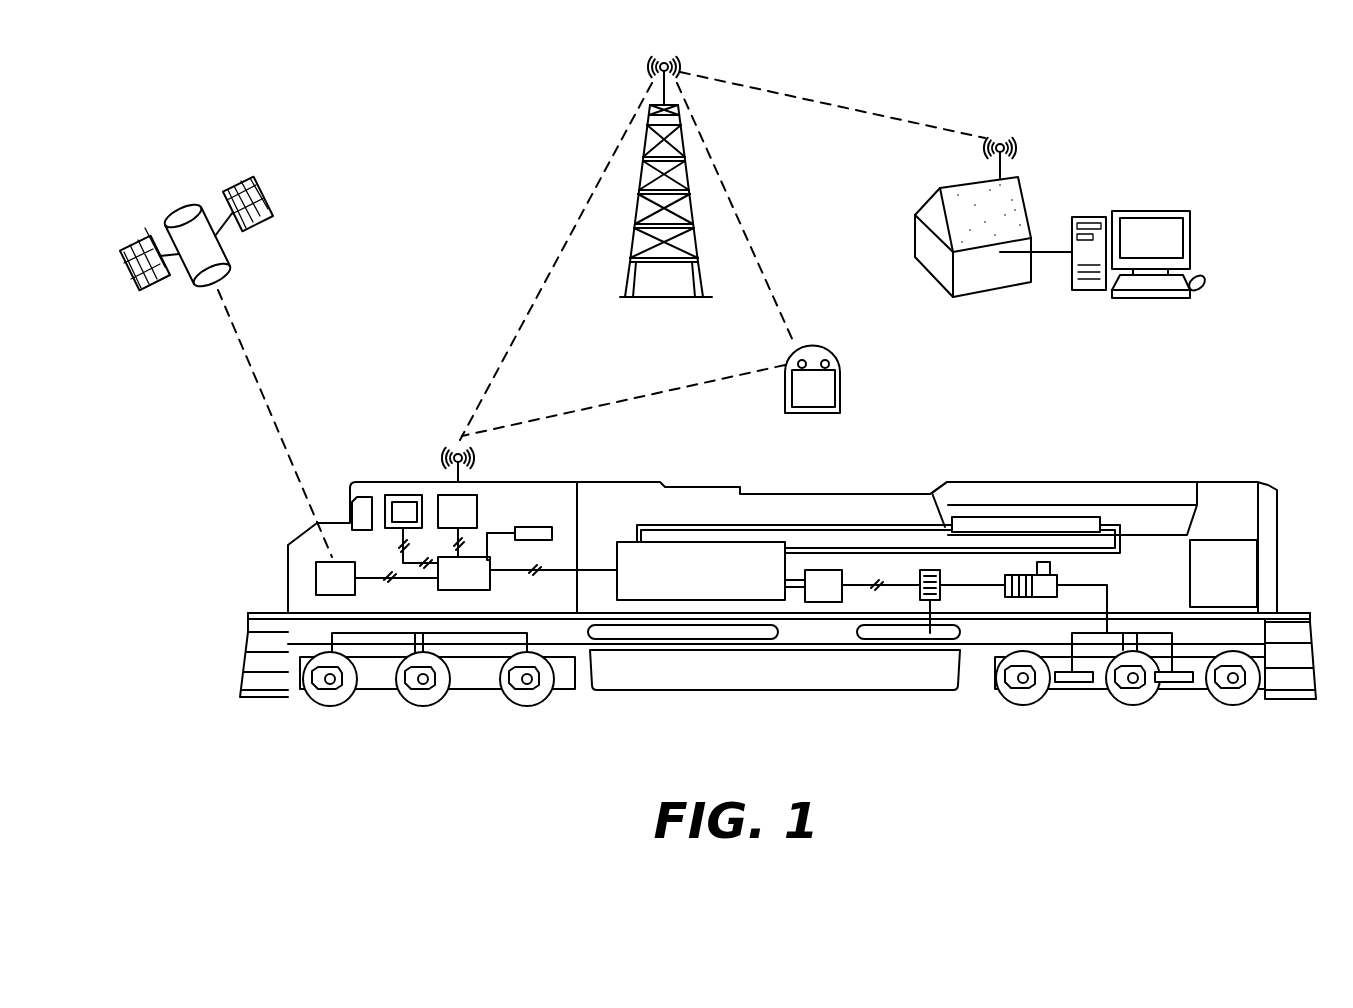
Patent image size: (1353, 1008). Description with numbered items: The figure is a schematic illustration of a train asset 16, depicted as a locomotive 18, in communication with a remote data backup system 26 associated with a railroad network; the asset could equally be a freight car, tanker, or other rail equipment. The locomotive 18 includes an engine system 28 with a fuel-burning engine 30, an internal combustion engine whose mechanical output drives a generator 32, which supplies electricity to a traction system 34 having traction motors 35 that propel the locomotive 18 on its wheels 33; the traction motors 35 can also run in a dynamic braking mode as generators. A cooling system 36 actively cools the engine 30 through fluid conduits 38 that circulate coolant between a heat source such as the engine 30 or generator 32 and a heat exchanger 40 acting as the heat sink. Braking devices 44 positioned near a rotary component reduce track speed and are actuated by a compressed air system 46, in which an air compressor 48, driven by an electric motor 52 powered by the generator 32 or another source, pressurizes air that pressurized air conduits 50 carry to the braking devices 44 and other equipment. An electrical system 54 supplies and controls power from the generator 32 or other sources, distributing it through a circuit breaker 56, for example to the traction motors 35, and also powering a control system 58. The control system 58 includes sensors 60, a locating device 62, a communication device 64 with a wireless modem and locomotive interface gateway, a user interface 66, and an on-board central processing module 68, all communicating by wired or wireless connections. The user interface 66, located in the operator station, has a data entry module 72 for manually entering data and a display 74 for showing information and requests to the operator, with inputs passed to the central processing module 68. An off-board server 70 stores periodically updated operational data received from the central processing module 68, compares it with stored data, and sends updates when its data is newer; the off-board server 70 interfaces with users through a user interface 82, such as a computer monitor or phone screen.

The train asset 16 is at (205, 576).
The locomotive 18 is at (288, 580).
The remote data backup system 26 is at (458, 215).
The engine system 28 is at (618, 534).
The engine 30 is at (688, 585).
The generator 32 is at (811, 599).
The wheels 33 is at (1192, 740).
The traction system 34 is at (773, 761).
The traction motors 35 is at (503, 740).
The cooling system 36 is at (1062, 466).
The fluid conduits 38 is at (822, 525).
The heat exchanger 40 is at (1003, 515).
The braking devices 44 is at (1113, 743).
The compressed air system 46 is at (1150, 571).
The air compressor 48 is at (1032, 596).
The pressurized air conduits 50 is at (1107, 598).
The electric motor 52 is at (1040, 560).
The electrical system 54 is at (909, 573).
The circuit breaker 56 is at (925, 604).
The control system 58 is at (333, 479).
The sensors 60 is at (525, 527).
The locating device 62 is at (323, 591).
The communication device 64 is at (446, 524).
The user interface 66 is at (387, 445).
The on-board central processing module 68 is at (452, 586).
The off-board server 70 is at (1085, 158).
The data entry module 72 is at (388, 507).
The display 74 is at (408, 503).
The user interface 82 is at (843, 388).